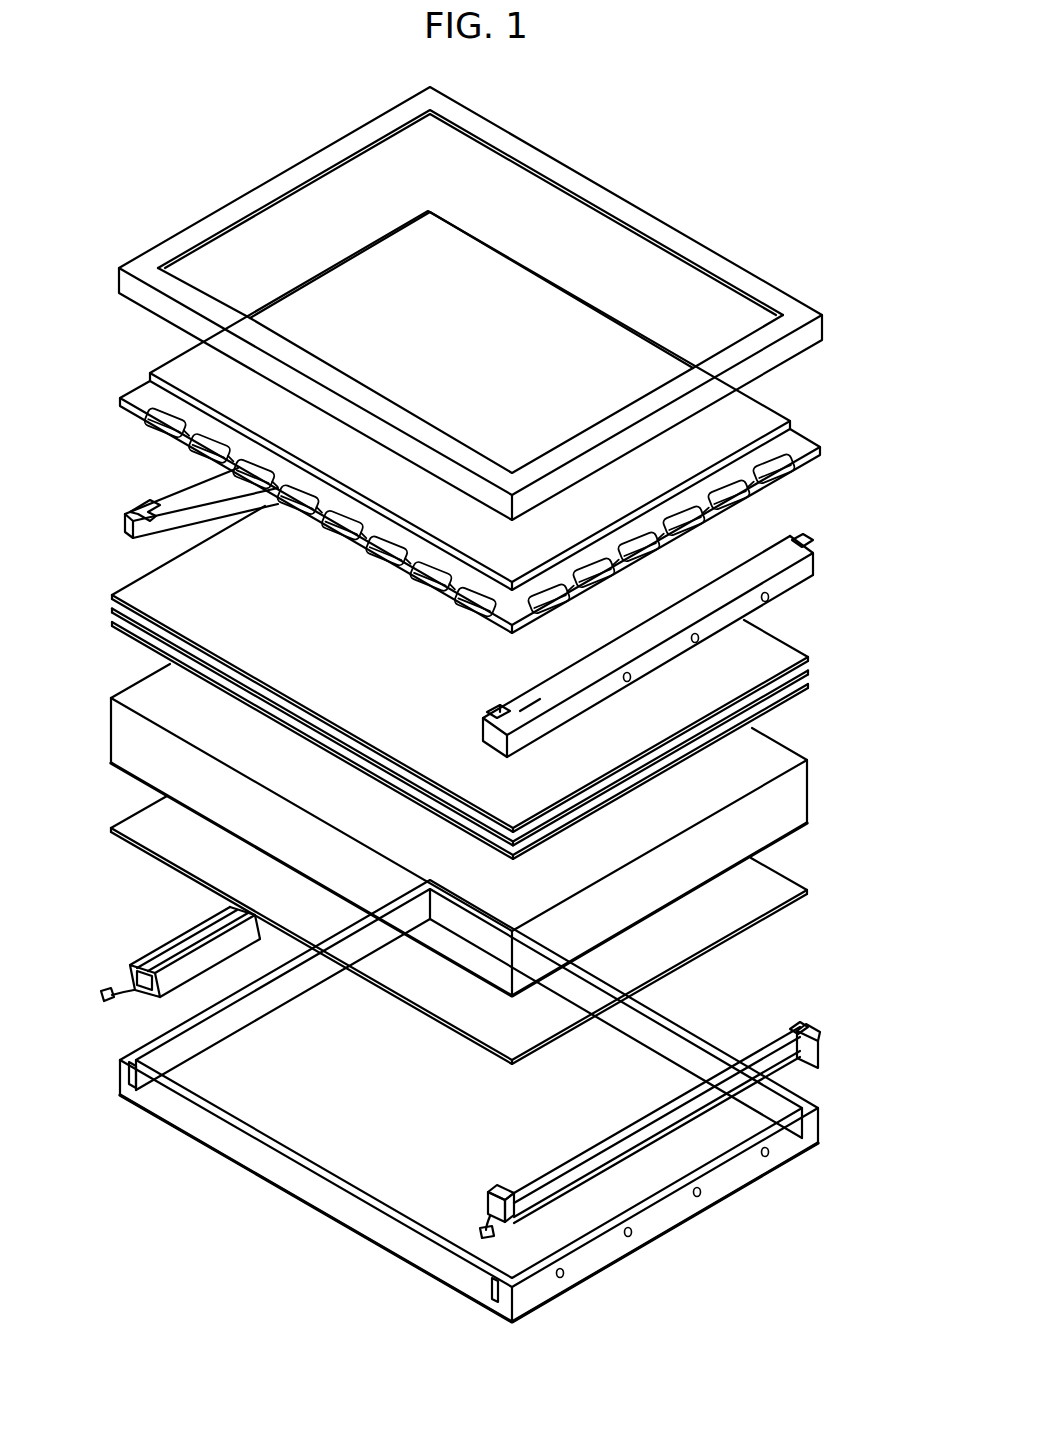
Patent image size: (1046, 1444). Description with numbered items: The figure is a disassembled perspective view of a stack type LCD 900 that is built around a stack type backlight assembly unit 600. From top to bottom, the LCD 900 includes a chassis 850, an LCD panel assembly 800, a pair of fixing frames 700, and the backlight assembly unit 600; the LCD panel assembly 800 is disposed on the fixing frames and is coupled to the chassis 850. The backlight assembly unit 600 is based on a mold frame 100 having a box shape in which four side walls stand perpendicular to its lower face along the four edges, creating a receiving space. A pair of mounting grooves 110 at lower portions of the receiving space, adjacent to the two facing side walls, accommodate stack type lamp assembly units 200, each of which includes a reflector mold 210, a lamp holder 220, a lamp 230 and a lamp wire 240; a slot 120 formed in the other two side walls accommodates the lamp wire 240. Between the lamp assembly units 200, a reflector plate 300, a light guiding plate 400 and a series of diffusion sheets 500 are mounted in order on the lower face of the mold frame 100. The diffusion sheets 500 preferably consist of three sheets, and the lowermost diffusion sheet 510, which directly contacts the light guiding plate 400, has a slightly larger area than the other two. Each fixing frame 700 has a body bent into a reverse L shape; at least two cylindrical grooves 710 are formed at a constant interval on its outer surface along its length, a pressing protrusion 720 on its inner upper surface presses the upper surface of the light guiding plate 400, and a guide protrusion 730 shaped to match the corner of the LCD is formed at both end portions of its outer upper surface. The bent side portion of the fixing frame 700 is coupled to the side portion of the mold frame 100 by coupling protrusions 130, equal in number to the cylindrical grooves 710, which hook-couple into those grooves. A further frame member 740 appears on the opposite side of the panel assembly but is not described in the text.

The LCD 900 is at (796, 213).
The chassis 850 is at (190, 192).
The LCD panel assembly 800 is at (148, 356).
The second side mold frame 740 is at (175, 492).
The fixing frame 700 is at (658, 677).
The cylindrical groove 710 is at (768, 601).
The pressing protrusion 720 is at (490, 735).
The guide protrusion 730 is at (533, 703).
The stack type backlight assembly unit 600 is at (482, 889).
The diffusion sheets 500 is at (428, 682).
The lowermost diffusion sheet 510 is at (441, 740).
The light guiding plate 400 is at (152, 765).
The reflector plate 300 is at (447, 1020).
The stack type lamp assembly unit 200 is at (155, 964).
The reflector mold 210 is at (178, 945).
The lamp holder 220 is at (140, 983).
The lamp 230 is at (227, 933).
The lamp wire 240 is at (125, 986).
The mold frame 100 is at (455, 1101).
The mounting groove 110 is at (212, 1052).
The slot 120 is at (124, 1076).
The coupling protrusion 130 is at (668, 1130).